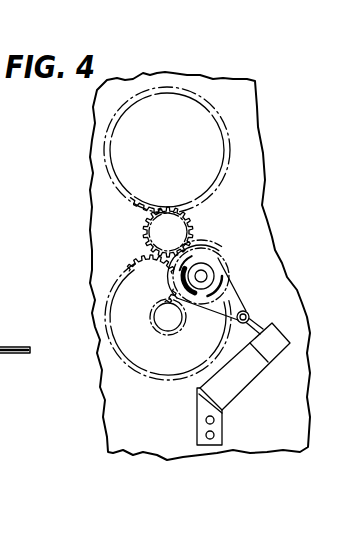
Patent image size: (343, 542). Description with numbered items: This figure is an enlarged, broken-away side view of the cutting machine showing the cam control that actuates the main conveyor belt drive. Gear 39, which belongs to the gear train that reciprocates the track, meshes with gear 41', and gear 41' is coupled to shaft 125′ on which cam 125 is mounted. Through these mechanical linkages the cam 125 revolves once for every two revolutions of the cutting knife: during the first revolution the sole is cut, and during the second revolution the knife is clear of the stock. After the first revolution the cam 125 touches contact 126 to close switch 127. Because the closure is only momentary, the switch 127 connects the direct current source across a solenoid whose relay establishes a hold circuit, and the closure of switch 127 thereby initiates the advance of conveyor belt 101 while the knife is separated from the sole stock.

The gear 39 is at (152, 305).
The shaft 125′ is at (201, 270).
The gear 41' is at (238, 242).
The cam 125 is at (234, 290).
The switch 127 is at (248, 299).
The contact 126 is at (250, 316).
The conveyor belt 101 is at (26, 322).